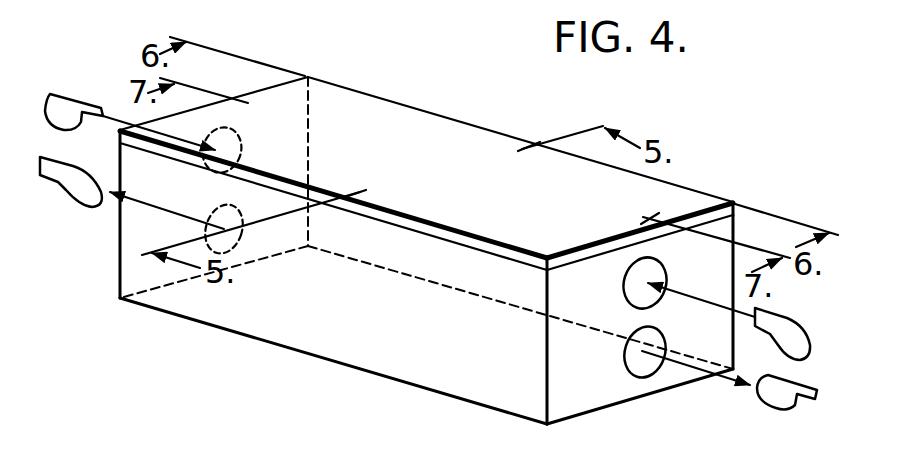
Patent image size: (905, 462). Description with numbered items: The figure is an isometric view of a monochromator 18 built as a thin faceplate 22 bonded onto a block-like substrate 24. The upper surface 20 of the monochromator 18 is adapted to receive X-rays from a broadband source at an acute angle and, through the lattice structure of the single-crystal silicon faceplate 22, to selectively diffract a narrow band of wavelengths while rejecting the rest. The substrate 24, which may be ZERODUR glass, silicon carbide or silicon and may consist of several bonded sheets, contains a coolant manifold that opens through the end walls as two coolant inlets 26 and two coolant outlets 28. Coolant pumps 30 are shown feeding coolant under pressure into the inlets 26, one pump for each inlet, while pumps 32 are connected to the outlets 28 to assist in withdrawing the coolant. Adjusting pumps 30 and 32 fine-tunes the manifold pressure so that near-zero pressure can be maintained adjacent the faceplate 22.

The monochromator 18 is at (708, 182).
The surface 20 is at (462, 122).
The faceplate 22 is at (735, 202).
The substrate 24 is at (757, 293).
The coolant inlets 26 is at (628, 308).
The coolant outlets 28 is at (628, 373).
The coolant pumps 30 is at (49, 94).
The pumps 32 is at (83, 207).